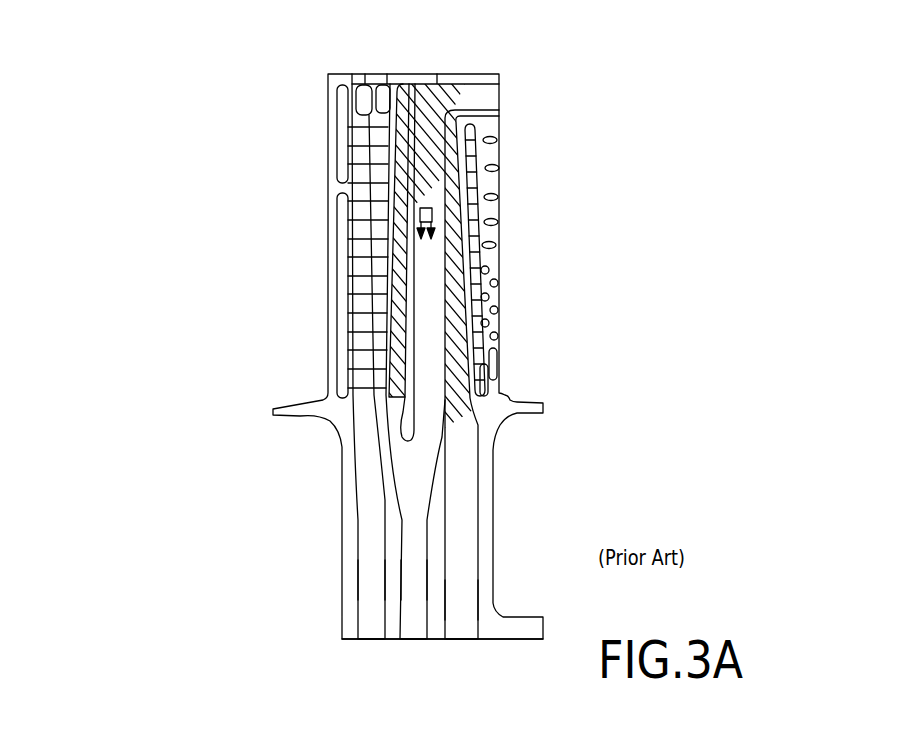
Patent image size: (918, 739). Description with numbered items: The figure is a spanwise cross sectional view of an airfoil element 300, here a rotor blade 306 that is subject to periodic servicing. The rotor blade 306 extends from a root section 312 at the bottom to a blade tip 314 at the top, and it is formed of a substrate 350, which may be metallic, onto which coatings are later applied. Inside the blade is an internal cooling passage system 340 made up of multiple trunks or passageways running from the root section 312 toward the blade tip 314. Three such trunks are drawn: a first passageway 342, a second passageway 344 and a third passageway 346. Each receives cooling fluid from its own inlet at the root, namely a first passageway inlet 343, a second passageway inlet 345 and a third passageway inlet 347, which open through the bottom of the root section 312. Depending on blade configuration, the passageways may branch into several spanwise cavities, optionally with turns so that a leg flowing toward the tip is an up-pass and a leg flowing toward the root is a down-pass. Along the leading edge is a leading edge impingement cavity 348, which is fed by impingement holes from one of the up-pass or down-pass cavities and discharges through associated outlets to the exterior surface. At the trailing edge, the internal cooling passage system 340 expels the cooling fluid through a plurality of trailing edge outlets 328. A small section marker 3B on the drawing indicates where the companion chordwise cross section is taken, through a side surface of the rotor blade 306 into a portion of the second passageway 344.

The airfoil element 300 is at (182, 80).
The rotor blade 306 is at (273, 160).
The root section 312 is at (325, 590).
The blade tip 314 is at (460, 68).
The trailing edge outlets 328 is at (488, 185).
The internal cooling passage system 340 is at (478, 162).
The first passageway 342 is at (372, 527).
The first passageway inlet 343 is at (370, 643).
The second passageway 344 is at (410, 514).
The second passageway inlet 345 is at (413, 643).
The third passageway 346 is at (462, 557).
The third passageway inlet 347 is at (465, 643).
The leading edge impingement cavity 348 is at (345, 262).
The substrate 350 is at (423, 283).
The chordwise cross sectional view indicator 3B is at (433, 216).